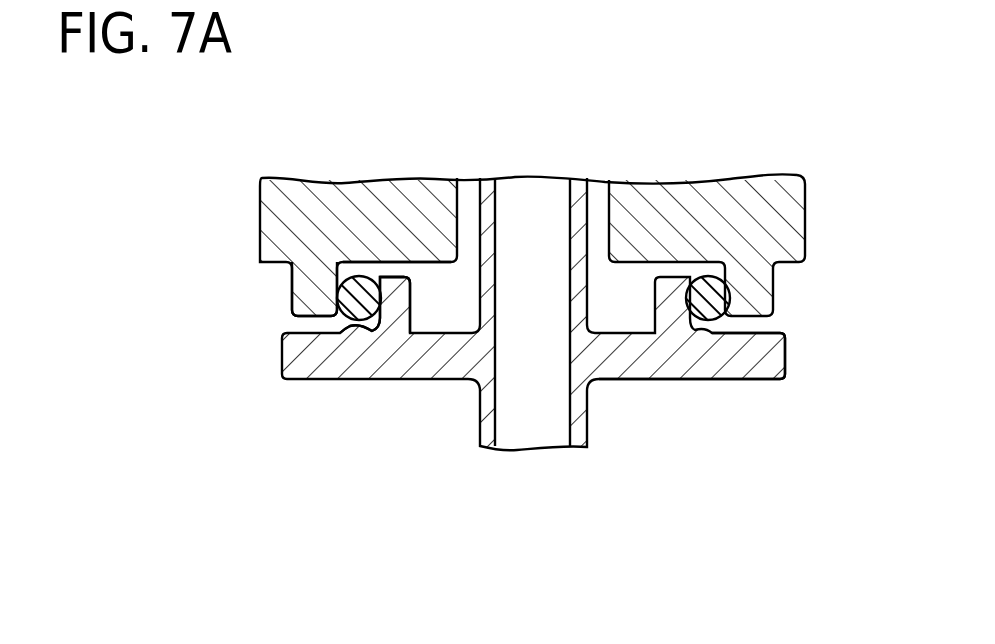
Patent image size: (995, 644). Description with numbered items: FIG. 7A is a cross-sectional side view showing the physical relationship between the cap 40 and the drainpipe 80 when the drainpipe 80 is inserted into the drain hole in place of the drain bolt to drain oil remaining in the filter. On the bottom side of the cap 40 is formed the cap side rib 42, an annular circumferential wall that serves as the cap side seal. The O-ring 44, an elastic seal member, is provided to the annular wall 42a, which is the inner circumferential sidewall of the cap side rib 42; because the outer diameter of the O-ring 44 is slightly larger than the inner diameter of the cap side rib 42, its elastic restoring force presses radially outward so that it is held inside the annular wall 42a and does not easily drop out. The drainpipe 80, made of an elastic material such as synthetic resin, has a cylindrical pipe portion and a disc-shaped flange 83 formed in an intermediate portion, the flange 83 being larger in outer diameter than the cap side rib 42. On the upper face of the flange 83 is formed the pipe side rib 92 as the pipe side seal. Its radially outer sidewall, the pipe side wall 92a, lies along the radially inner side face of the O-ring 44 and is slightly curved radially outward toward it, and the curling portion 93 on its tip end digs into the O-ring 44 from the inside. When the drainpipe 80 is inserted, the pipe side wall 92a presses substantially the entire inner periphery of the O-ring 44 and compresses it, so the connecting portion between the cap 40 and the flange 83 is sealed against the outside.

The cap 40 is at (705, 162).
The cap side rib 42 is at (313, 292).
The annular wall 42a is at (353, 264).
The curling portion 93 is at (395, 284).
The pipe side rib 92 is at (395, 318).
The pipe side wall 92a is at (349, 327).
The O-ring 44 is at (710, 314).
The flange 83 is at (680, 358).
The drainpipe 80 is at (442, 417).